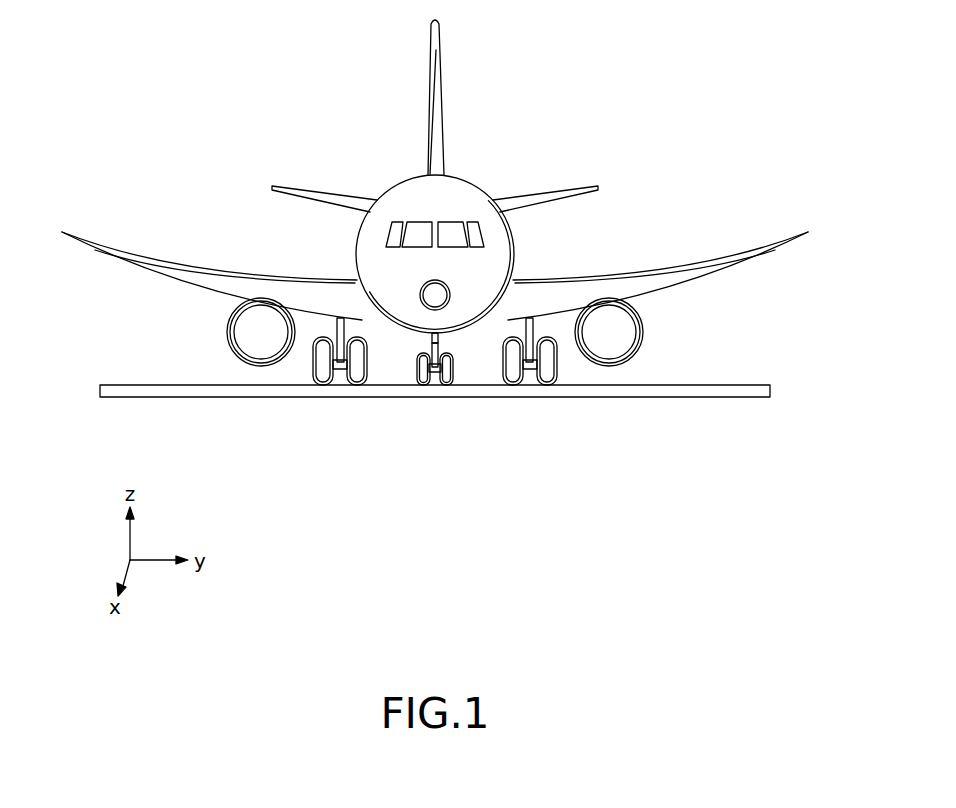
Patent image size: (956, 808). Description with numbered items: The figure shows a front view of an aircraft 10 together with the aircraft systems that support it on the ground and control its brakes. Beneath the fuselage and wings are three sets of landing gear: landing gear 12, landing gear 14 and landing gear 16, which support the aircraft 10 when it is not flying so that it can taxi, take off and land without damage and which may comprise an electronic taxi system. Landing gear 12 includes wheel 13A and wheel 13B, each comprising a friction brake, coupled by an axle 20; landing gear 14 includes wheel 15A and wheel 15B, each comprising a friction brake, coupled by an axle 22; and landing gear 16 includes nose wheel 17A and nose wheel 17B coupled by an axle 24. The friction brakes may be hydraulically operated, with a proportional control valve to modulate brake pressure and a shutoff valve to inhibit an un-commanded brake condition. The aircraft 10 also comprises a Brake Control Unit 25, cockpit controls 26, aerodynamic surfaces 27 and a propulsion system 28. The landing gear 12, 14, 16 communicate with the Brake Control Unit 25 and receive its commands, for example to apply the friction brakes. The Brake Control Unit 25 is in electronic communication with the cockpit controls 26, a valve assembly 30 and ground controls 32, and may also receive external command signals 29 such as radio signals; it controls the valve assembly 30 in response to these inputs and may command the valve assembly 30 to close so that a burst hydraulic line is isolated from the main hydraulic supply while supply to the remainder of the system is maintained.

The aircraft 10 is at (435, 268).
The landing gear 12 is at (484, 378).
The wheel 13A is at (582, 401).
The wheel 13B is at (565, 354).
The landing gear 14 is at (325, 423).
The wheel 15A is at (316, 406).
The wheel 15B is at (376, 404).
The landing gear 16 is at (472, 383).
The nose wheel 17A is at (474, 410).
The nose wheel 17B is at (411, 438).
The axle 20 is at (539, 398).
The axle 22 is at (347, 423).
The axle 24 is at (443, 427).
The Brake Control Unit 25 is at (355, 269).
The cockpit controls 26 is at (364, 224).
The aerodynamic surfaces 27 is at (435, 256).
The propulsion system 28 is at (651, 332).
The external command signals 29 is at (461, 176).
The valve assembly 30 is at (251, 304).
The ground controls 32 is at (408, 349).